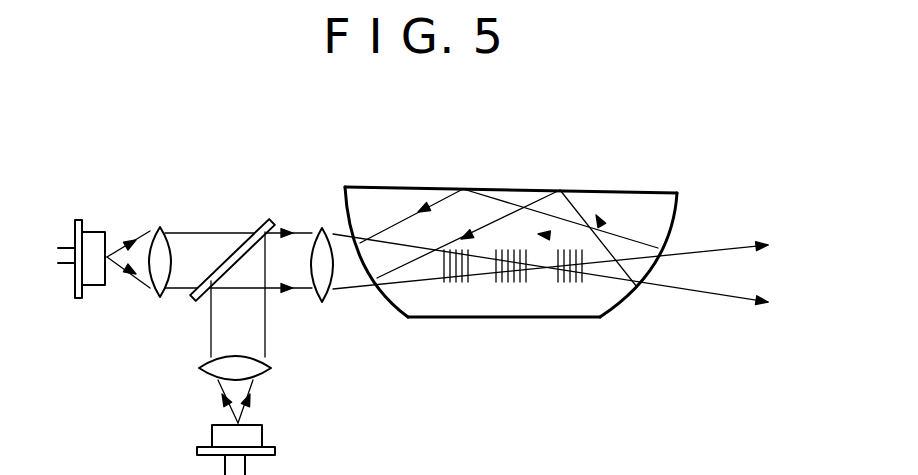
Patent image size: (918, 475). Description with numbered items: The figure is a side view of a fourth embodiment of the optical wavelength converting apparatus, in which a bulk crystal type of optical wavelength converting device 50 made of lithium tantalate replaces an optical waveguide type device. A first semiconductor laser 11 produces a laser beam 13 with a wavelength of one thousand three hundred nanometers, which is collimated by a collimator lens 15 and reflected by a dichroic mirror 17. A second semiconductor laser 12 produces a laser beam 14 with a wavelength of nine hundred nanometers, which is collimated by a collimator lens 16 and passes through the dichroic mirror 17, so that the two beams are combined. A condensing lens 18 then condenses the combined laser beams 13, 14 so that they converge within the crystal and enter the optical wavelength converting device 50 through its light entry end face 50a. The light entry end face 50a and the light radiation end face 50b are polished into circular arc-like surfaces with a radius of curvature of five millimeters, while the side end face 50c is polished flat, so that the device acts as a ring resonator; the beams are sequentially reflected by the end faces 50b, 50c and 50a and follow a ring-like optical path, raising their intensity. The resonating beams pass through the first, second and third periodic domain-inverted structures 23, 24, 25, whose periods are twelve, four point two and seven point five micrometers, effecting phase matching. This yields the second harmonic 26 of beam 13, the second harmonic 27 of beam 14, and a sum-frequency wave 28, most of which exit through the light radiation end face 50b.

The first semiconductor laser 11 is at (257, 437).
The second semiconductor laser 12 is at (97, 228).
The laser beam 13 is at (217, 387).
The laser beam 14 is at (148, 238).
The collimator lens 15 is at (228, 355).
The collimator lens 16 is at (177, 242).
The dichroic mirror 17 is at (240, 247).
The condensing lens 18 is at (305, 248).
The first periodic domain-inverted structure 23 is at (458, 285).
The second periodic domain-inverted structure 24 is at (512, 285).
The third periodic domain-inverted structure 25 is at (573, 285).
The second harmonic 26 is at (707, 245).
The second harmonic 27 is at (550, 267).
The sum-frequency wave 28 is at (762, 246).
The optical wavelength converting device 50 is at (492, 170).
The light entry end face 50a is at (390, 303).
The light radiation end face 50b is at (623, 303).
The side end face 50c is at (607, 188).